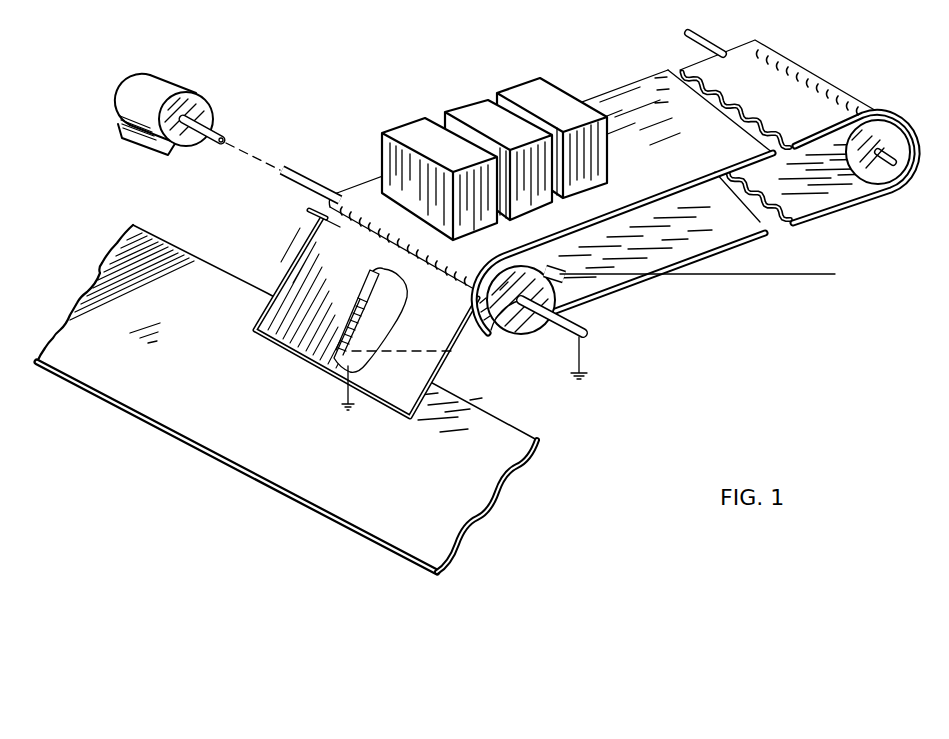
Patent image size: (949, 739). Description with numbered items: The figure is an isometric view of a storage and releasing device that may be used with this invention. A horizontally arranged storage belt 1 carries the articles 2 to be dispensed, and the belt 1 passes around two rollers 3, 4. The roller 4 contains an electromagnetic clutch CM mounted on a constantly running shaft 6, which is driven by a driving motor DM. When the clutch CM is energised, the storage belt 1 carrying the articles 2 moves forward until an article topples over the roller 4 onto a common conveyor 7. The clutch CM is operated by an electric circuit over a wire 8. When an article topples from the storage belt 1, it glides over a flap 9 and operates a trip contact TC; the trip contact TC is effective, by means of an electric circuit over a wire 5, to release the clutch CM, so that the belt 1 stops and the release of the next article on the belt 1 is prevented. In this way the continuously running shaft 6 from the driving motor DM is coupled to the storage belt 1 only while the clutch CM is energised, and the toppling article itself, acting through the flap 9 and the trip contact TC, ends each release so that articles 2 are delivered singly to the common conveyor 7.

The storage belt 1 is at (631, 95).
The articles 2 is at (398, 128).
The roller 3 is at (902, 146).
The roller 4 is at (517, 260).
The wire 5 is at (528, 351).
The shaft 6 is at (293, 170).
The common conveyor 7 is at (82, 375).
The wire 8 is at (740, 276).
The flap 9 is at (290, 270).
The driving motor DM is at (148, 83).
The electromagnetic clutch CM is at (541, 272).
The trip contact TC is at (363, 286).